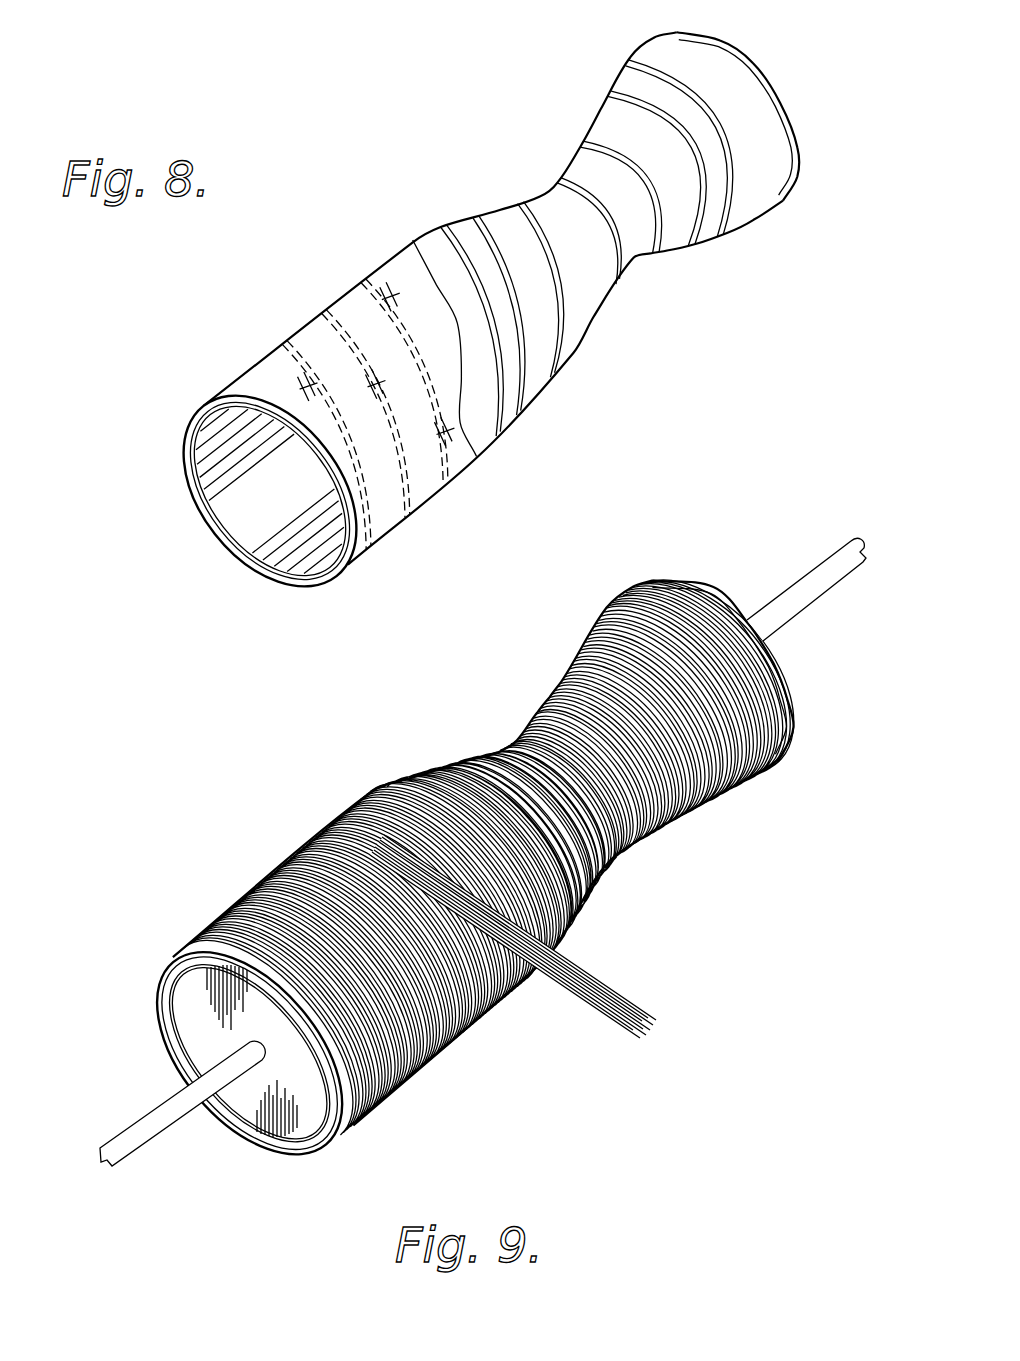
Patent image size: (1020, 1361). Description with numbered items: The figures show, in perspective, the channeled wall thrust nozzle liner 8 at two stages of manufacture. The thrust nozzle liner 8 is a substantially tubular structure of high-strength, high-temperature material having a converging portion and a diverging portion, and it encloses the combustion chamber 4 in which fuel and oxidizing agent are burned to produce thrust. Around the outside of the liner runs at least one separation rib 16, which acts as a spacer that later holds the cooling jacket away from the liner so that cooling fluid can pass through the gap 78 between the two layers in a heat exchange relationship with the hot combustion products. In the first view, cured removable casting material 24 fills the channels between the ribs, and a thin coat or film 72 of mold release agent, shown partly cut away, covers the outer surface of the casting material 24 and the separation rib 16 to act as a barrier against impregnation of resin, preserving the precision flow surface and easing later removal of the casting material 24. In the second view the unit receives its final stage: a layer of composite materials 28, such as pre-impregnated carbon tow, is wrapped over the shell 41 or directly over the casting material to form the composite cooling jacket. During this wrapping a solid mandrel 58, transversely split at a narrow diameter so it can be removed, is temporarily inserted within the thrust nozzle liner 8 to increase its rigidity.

In FIG. 8, the combustion chamber 4 is at (253, 515).
In FIG. 8, the thrust nozzle liner 8 is at (307, 580).
In FIG. 9, the thrust nozzle liner 8 is at (173, 1034).
In FIG. 8, the separation rib 16 is at (582, 333).
In FIG. 8, the removable casting material 24 is at (440, 233).
In FIG. 8, the thin coat or film 72 is at (345, 307).
In FIG. 9, the composite materials 28 is at (392, 1042).
In FIG. 9, the shell 41 is at (167, 970).
In FIG. 9, the solid mandrel 58 is at (270, 1123).
In FIG. 9, the gap 78 is at (183, 952).